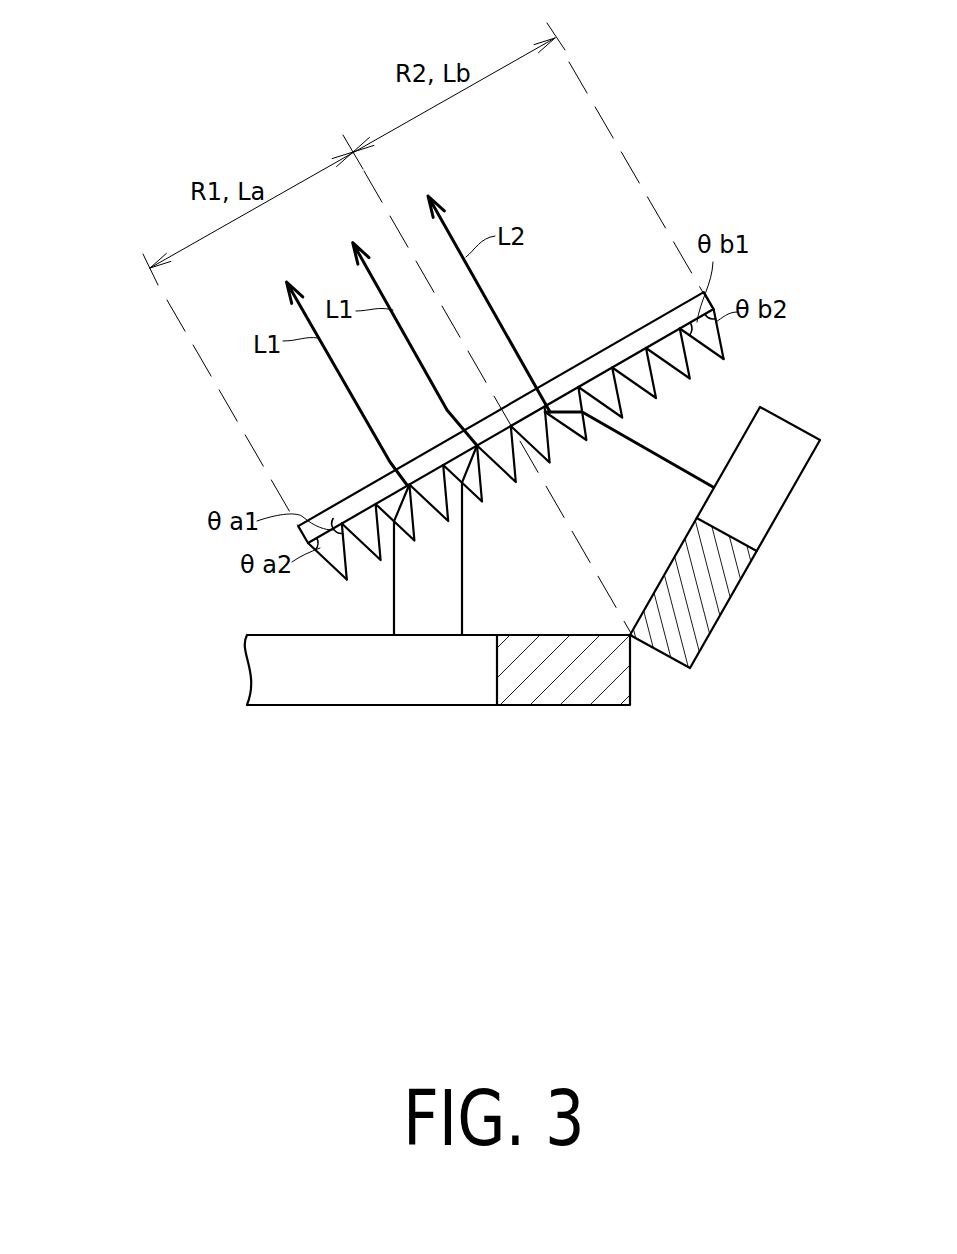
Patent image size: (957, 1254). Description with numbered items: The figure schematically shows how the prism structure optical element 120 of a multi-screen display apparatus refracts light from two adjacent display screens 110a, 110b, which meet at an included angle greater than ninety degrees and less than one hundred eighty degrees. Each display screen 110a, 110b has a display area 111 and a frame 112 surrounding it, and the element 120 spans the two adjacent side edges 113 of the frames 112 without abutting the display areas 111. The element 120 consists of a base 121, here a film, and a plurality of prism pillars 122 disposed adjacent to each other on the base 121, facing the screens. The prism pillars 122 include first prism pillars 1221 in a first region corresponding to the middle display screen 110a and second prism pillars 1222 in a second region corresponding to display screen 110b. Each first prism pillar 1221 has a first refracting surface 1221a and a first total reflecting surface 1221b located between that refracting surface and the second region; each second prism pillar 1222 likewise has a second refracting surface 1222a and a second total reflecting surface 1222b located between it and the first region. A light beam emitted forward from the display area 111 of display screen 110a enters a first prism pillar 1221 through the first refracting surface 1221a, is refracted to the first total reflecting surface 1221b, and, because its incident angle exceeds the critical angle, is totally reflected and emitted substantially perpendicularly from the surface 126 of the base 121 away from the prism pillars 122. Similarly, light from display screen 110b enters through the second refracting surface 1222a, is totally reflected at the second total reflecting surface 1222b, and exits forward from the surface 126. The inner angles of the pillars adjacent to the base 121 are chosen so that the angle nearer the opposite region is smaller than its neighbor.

The display screen 110a is at (467, 745).
The display screen 110b is at (870, 795).
The display area 111 is at (428, 683).
The frame 112 is at (555, 720).
The side edge 113 is at (543, 693).
The prism structure optical element 120 is at (738, 290).
The base 121 is at (620, 345).
The prism pillars 122 is at (445, 390).
The first prism pillars 1221 is at (302, 523).
The first refracting surface 1221a is at (330, 576).
The first total reflecting surface 1221b is at (354, 574).
The second prism pillars 1222 is at (690, 291).
The second refracting surface 1222a is at (731, 345).
The second total reflecting surface 1222b is at (710, 366).
The surface 126 is at (574, 350).